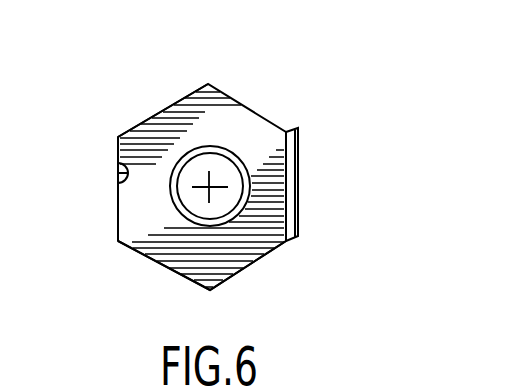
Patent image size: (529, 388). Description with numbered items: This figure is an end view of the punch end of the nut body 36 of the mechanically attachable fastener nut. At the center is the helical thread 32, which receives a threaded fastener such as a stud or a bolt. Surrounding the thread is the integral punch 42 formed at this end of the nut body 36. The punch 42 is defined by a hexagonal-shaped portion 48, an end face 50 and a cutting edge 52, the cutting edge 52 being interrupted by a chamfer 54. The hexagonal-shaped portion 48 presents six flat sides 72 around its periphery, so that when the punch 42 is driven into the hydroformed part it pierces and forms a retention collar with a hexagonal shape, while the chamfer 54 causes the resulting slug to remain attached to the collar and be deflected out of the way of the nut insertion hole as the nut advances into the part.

The helical thread 32 is at (236, 160).
The nut body 36 is at (270, 95).
The integral punch 42 is at (278, 109).
The hexagonal-shaped portion 48 is at (167, 108).
The end face 50 is at (137, 222).
The cutting edge 52 is at (118, 164).
The chamfer 54 is at (300, 181).
The flat sides 72 is at (140, 108).